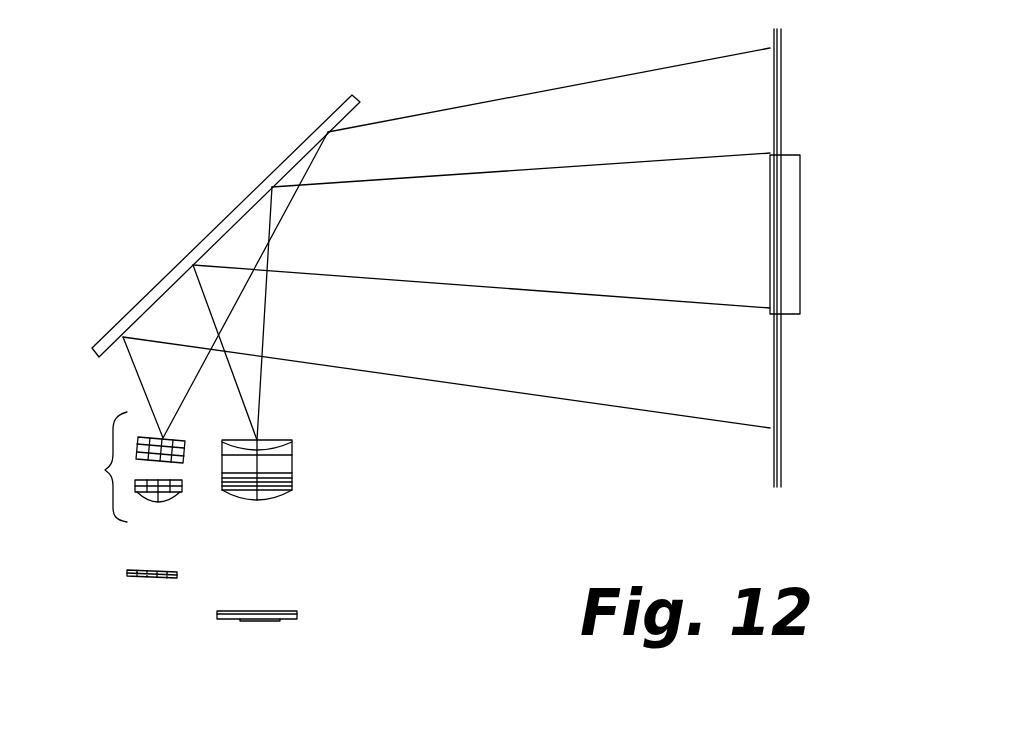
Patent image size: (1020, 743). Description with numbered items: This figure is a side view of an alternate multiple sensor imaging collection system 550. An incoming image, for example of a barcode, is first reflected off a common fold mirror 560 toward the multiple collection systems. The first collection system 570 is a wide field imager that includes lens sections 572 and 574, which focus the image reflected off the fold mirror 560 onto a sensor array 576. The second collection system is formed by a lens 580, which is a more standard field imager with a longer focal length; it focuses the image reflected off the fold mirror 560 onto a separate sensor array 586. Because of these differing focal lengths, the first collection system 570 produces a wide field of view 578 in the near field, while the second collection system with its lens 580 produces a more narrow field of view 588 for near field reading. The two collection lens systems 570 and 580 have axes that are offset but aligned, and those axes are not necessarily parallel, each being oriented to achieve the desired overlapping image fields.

The multiple sensor imaging collection system 550 is at (226, 99).
The common fold mirror 560 is at (208, 242).
The first collection system 570 is at (98, 473).
The lens section 572 is at (158, 460).
The lens section 574 is at (178, 497).
The sensor array 576 is at (143, 570).
The wide field of view 578 is at (781, 361).
The lens 580 is at (280, 452).
The sensor array 586 is at (280, 611).
The narrow field of view 588 is at (800, 183).